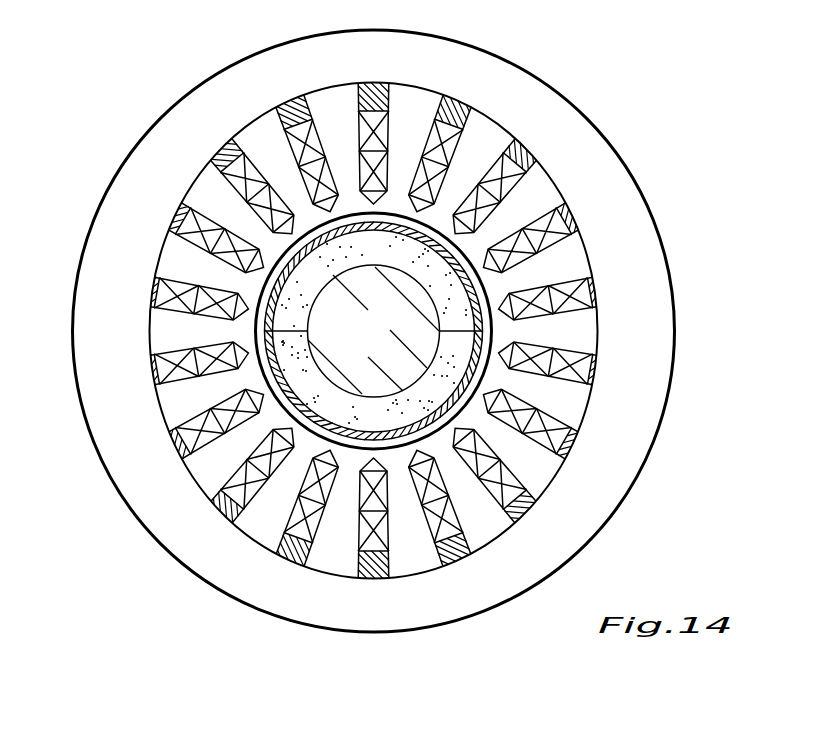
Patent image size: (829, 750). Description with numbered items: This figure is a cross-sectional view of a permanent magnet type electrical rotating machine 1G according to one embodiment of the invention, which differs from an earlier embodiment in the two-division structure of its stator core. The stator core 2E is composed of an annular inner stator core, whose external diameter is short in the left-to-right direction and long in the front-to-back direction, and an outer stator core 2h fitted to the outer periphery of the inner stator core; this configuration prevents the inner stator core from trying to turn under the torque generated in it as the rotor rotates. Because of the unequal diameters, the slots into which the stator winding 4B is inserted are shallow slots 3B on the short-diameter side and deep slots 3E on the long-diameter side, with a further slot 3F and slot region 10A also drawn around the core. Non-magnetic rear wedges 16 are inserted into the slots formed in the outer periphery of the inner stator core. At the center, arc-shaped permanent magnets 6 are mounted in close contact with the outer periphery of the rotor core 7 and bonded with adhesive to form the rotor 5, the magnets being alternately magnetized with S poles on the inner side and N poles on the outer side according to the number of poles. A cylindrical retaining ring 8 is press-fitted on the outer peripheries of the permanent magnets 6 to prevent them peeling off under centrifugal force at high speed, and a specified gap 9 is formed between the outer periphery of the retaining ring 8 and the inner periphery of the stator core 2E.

The permanent magnet type electric rotating machine 1G is at (396, 331).
The stator core 2E is at (604, 490).
The outer stator core 2h is at (653, 383).
The shallow slot 3B is at (572, 308).
The deep slot 3E is at (390, 128).
The stator core tooth segment 3F is at (220, 437).
The stator winding 4B is at (360, 537).
The rotor 5 is at (543, 178).
The permanent magnet 6 is at (314, 266).
The rotor core 7 is at (383, 347).
The retaining ring 8 is at (465, 252).
The gap 9 is at (570, 250).
The slot 10A is at (480, 427).
The rear wedge 16 is at (376, 580).